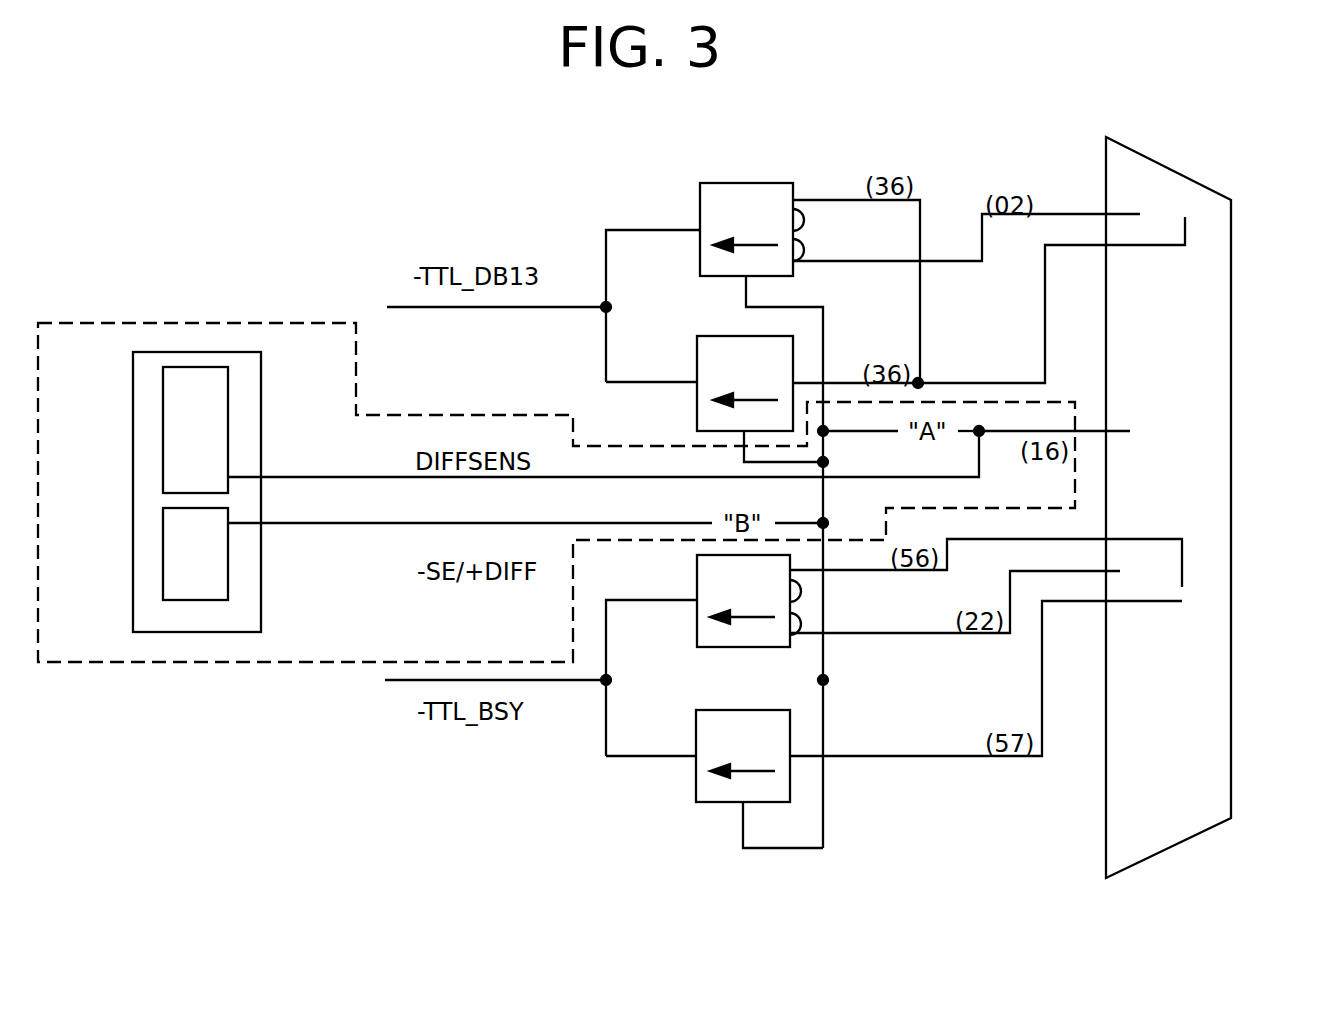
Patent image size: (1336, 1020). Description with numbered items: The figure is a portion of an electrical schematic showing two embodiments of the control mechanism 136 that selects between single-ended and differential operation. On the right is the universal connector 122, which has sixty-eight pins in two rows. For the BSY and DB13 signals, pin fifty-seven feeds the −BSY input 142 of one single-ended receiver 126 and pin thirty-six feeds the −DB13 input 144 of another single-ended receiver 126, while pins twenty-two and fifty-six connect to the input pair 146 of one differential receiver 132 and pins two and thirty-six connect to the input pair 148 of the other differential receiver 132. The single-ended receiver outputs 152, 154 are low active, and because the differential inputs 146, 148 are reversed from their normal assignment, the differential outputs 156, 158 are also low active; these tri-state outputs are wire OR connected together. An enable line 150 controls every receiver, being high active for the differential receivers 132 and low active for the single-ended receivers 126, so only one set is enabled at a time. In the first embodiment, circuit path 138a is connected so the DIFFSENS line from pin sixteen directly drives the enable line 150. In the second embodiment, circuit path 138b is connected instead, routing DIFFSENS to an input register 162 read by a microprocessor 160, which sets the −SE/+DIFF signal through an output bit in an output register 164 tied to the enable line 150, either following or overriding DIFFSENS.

The universal connector 122 is at (1233, 305).
The single-ended receiver 126 is at (697, 413).
The differential receiver 132 is at (698, 197).
The control mechanism 136 is at (260, 663).
The circuit path 138a is at (1011, 433).
The circuit path 138b is at (532, 521).
The −BSY input 142 is at (793, 754).
The −DB13 input 144 is at (793, 353).
The input pair 146 is at (807, 600).
The input pair 148 is at (807, 230).
The enable line 150 is at (820, 509).
The single-ended receiver output 152 is at (693, 754).
The single-ended receiver output 154 is at (697, 382).
The differential output 156 is at (697, 603).
The differential output 158 is at (698, 231).
The microprocessor 160 is at (226, 633).
The input register 162 is at (163, 461).
The output register 164 is at (162, 555).